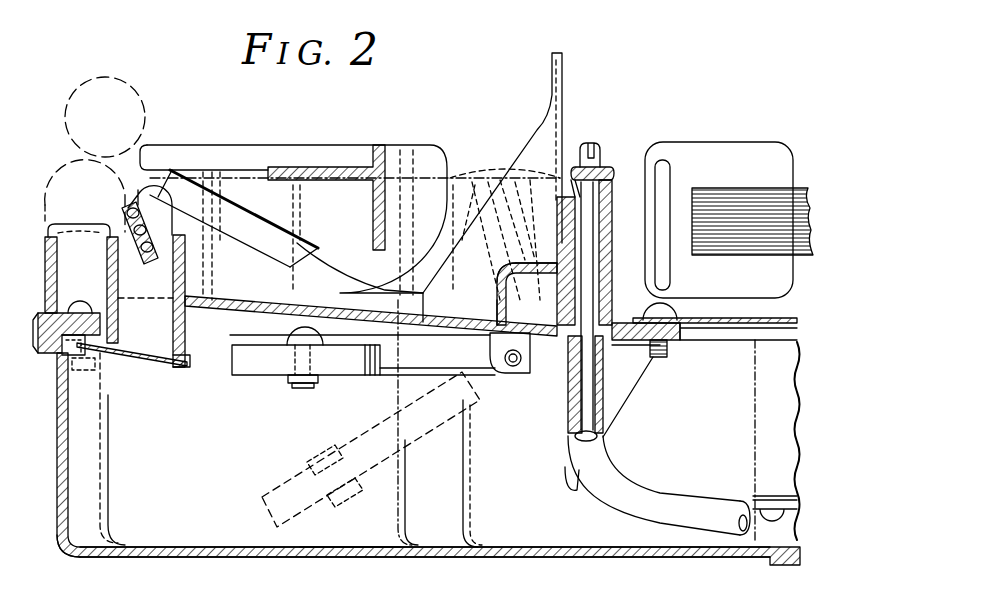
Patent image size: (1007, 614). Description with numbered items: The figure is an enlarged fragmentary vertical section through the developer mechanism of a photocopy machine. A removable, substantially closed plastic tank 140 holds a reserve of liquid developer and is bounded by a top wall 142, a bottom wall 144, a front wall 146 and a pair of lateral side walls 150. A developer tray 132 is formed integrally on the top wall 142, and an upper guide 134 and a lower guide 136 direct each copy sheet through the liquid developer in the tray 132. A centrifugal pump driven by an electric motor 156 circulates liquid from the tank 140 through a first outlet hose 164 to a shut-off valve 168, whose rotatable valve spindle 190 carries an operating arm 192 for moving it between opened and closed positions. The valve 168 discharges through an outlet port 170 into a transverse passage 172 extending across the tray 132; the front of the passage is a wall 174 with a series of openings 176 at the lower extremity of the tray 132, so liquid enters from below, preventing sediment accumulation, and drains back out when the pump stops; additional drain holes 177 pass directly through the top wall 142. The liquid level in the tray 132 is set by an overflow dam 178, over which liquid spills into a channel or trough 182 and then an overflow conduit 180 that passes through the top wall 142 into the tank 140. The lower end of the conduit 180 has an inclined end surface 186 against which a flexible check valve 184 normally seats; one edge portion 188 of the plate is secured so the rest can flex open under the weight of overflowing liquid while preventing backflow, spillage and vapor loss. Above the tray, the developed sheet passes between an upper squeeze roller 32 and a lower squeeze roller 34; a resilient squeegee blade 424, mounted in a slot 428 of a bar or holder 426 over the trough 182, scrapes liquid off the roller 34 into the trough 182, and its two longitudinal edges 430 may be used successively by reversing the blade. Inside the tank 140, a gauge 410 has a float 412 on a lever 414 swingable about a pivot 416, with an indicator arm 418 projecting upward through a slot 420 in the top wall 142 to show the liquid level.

The upper squeeze roller 32 is at (78, 90).
The lower squeeze roller 34 is at (65, 152).
The longitudinal edges 430 is at (125, 205).
The squeegee blade 424 is at (125, 218).
The slot 428 is at (150, 230).
The bar or holder 426 is at (188, 225).
The developer tray 132 is at (322, 143).
The lower guide 136 is at (278, 227).
The upper guide 134 is at (288, 258).
The top wall 142 is at (270, 300).
The overflow dam 178 is at (186, 248).
The channel or trough 182 is at (153, 278).
The edge portion 188 is at (60, 377).
The inclined end surface 186 is at (100, 367).
The check valve 184 is at (127, 353).
The overflow conduit 180 is at (187, 357).
The tank 140 is at (55, 437).
The front wall 146 is at (62, 510).
The bottom wall 144 is at (183, 554).
The lateral side walls 150 is at (334, 526).
The gauge 410 is at (232, 378).
The float 412 is at (256, 380).
The lever 414 is at (473, 400).
The pivot 416 is at (512, 366).
The drain holes 177 is at (556, 380).
The first outlet hose 164 is at (660, 496).
The outlet port 170 is at (557, 306).
The openings 176 is at (497, 310).
The wall 174 is at (495, 290).
The transverse passage 172 is at (530, 268).
The indicator arm 418 is at (462, 172).
The slot 420 is at (495, 168).
The operating arm 192 is at (597, 158).
The shut-off valve 168 is at (610, 215).
The valve spindle 190 is at (612, 253).
The electric motor 156 is at (737, 190).